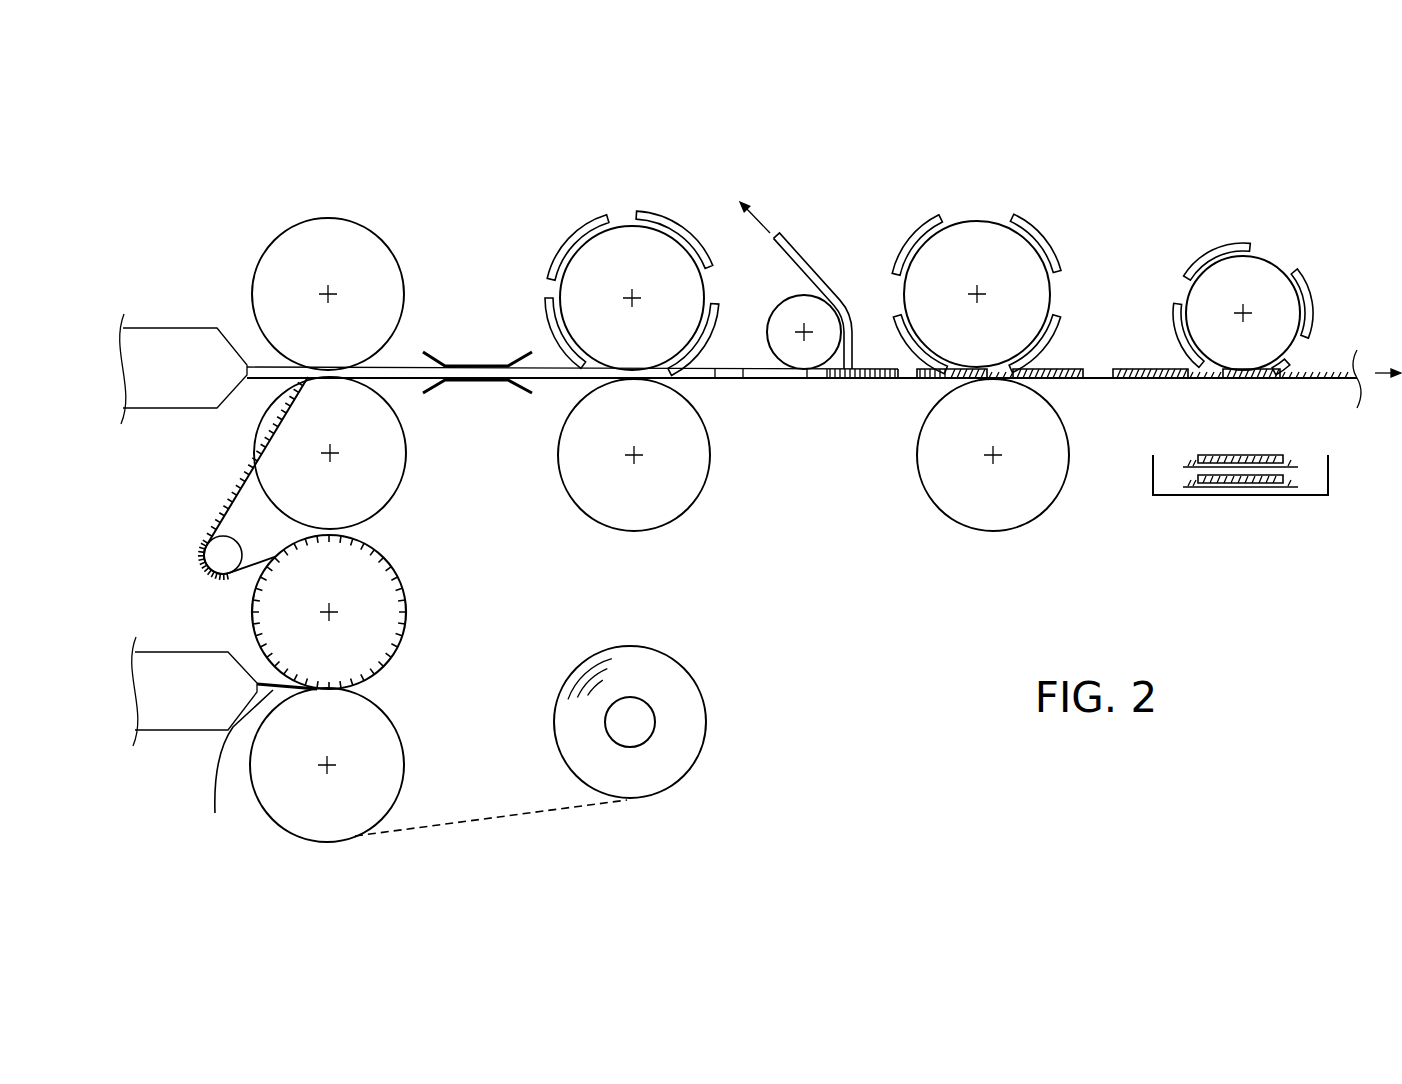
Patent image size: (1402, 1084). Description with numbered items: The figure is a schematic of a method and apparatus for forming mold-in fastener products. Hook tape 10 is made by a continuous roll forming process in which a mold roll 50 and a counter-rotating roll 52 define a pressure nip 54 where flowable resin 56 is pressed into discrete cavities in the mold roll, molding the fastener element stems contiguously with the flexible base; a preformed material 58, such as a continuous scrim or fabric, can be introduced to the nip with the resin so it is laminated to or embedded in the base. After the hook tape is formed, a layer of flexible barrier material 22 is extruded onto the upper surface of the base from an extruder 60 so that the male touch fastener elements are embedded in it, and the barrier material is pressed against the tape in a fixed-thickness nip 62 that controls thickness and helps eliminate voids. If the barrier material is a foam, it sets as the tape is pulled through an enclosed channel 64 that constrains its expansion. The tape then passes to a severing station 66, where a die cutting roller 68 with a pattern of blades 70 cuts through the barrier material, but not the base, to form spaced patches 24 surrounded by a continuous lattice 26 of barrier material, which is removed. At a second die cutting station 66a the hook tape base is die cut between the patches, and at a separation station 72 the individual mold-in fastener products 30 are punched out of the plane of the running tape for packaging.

The hook tape 10 is at (199, 510).
The flexible barrier material 22 is at (257, 360).
The patches 24 is at (873, 368).
The continuous lattice 26 is at (757, 254).
The mold-in fastener products 30 is at (1205, 428).
The mold roll 50 is at (303, 656).
The counter-rotating roll 52 is at (313, 813).
The pressure nip 54 is at (398, 702).
The flowable resin 56 is at (237, 768).
The preformed material 58 is at (498, 820).
The extruder 60 is at (165, 376).
The fixed-thickness nip 62 is at (380, 360).
The enclosed channel 64 is at (463, 398).
The severing station 66 is at (558, 195).
The second die cutting station 66a is at (1045, 195).
The die cutting roller 68 is at (617, 343).
The blades 70 is at (577, 232).
The separation station 72 is at (1267, 245).